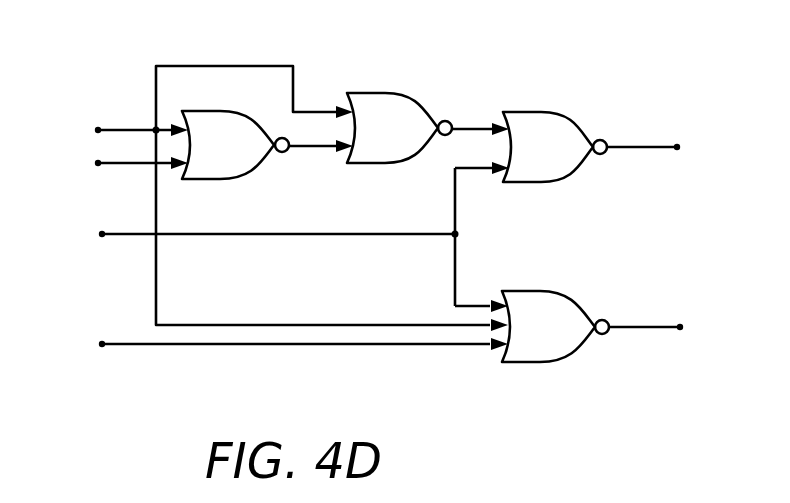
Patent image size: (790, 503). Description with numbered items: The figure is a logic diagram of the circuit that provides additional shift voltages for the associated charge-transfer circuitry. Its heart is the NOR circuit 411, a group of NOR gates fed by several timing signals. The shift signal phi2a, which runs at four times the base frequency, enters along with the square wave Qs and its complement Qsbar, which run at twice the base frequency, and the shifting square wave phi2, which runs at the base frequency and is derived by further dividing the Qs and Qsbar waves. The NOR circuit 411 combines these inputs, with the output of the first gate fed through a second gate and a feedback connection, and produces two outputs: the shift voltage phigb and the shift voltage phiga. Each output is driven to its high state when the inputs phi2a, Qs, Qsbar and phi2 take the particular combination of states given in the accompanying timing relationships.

The NOR circuit 411 is at (388, 243).
The shifting square wave phi2 is at (98, 130).
The square wave Qsbar is at (63, 155).
The shift signal phi2a is at (102, 234).
The square wave Qs is at (102, 344).
The shift voltage phigb is at (668, 148).
The shift voltage phiga is at (671, 328).